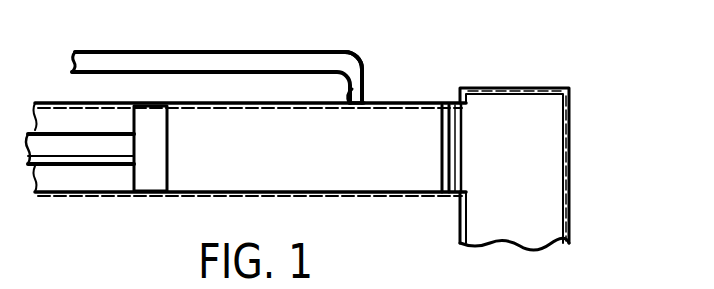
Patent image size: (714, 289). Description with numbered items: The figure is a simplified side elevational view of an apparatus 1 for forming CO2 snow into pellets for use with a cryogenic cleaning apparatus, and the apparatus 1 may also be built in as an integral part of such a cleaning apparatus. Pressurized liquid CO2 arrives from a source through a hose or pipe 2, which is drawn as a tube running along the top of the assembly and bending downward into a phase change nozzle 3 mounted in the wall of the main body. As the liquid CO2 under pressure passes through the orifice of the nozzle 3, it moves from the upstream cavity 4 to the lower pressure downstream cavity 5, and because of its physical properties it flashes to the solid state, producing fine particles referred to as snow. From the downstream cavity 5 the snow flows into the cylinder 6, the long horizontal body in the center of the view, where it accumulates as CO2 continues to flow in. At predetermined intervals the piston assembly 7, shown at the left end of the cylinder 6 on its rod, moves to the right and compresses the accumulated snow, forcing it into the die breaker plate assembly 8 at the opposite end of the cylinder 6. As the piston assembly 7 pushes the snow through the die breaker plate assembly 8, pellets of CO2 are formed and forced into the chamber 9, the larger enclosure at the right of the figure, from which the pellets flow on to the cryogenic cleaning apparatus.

The apparatus 1 is at (465, 86).
The hose or pipe 2 is at (181, 62).
The phase change nozzle 3 is at (358, 96).
The upstream cavity 4 is at (352, 64).
The downstream cavity 5 is at (368, 103).
The cylinder 6 is at (295, 168).
The piston assembly 7 is at (144, 167).
The die breaker plate assembly 8 is at (455, 175).
The chamber 9 is at (552, 146).